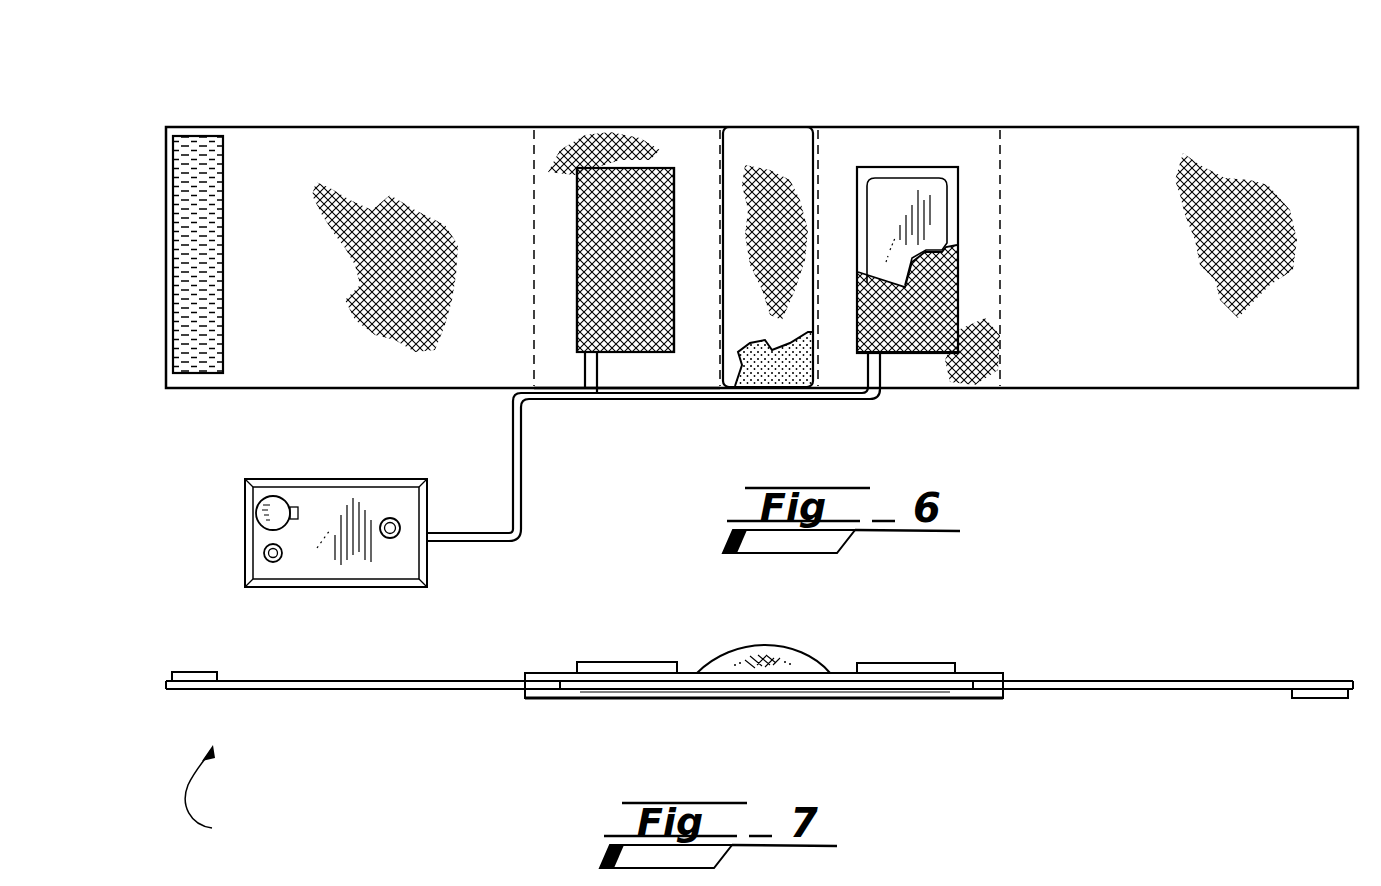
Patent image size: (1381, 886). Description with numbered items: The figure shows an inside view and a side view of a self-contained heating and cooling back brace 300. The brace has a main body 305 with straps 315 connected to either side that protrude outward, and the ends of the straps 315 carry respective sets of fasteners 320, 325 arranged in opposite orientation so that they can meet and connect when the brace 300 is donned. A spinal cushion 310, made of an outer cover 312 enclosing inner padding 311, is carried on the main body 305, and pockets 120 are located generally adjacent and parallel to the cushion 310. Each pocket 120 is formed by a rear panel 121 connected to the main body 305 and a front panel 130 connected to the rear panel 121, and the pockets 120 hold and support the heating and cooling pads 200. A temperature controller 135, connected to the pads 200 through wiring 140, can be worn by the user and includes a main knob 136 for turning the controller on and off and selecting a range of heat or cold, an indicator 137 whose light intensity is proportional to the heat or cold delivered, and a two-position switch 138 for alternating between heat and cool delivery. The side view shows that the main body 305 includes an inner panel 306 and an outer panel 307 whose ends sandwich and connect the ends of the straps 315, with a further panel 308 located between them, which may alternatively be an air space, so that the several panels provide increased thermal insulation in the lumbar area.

In FIG. 6, the pockets 120 is at (602, 173).
In FIG. 7, the pockets 120 is at (617, 661).
In FIG. 6, the rear panel 121 is at (902, 167).
In FIG. 6, the front panel 130 is at (648, 173).
In FIG. 6, the temperature controller 135 is at (243, 513).
In FIG. 6, the main knob 136 is at (273, 500).
In FIG. 6, the indicator 137 is at (273, 560).
In FIG. 6, the two-position switch 138 is at (393, 517).
In FIG. 6, the wiring 140 is at (524, 447).
In FIG. 6, the heating and cooling pads 200 is at (942, 195).
In FIG. 7, the self-contained heating and cooling back brace 300 is at (227, 795).
In FIG. 6, the main body 305 is at (650, 368).
In FIG. 7, the main body 305 is at (817, 712).
In FIG. 7, the inner panel 306 is at (993, 673).
In FIG. 7, the outer panel 307 is at (983, 698).
In FIG. 7, the further panel 308 is at (730, 683).
In FIG. 6, the spinal cushion 310 is at (750, 140).
In FIG. 7, the spinal cushion 310 is at (760, 646).
In FIG. 6, the inner padding 311 is at (773, 378).
In FIG. 6, the outer cover 312 is at (783, 140).
In FIG. 6, the straps 315 is at (383, 150).
In FIG. 7, the straps 315 is at (335, 692).
In FIG. 6, the fasteners 320 is at (1197, 127).
In FIG. 7, the fasteners 320 is at (1323, 698).
In FIG. 6, the fasteners 325 is at (197, 134).
In FIG. 7, the fasteners 325 is at (190, 672).